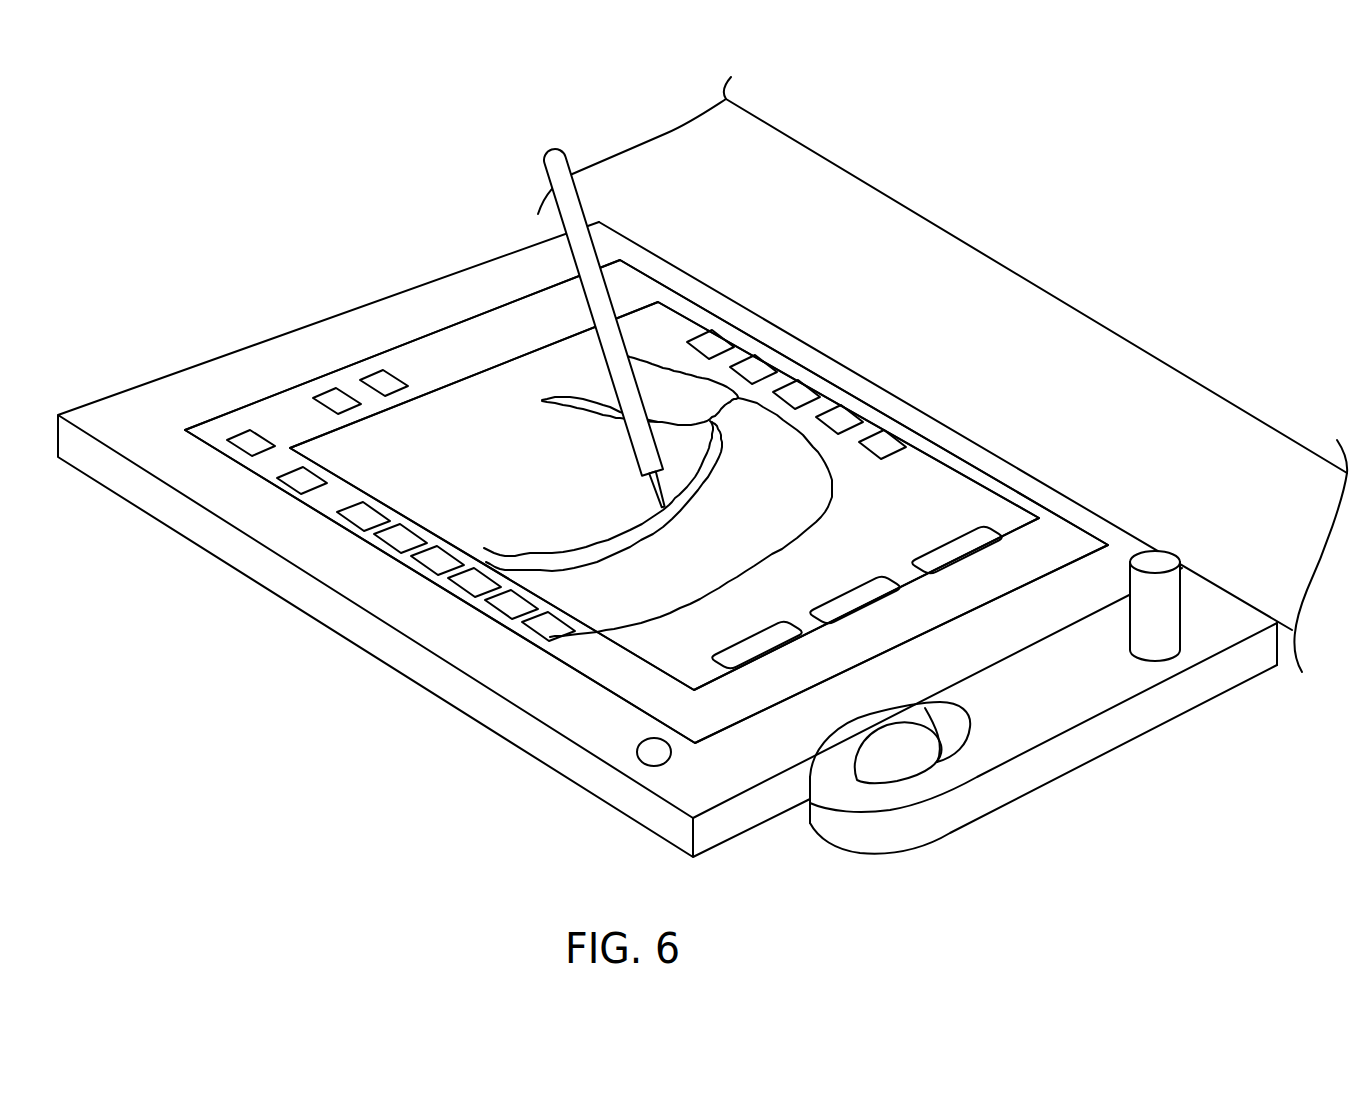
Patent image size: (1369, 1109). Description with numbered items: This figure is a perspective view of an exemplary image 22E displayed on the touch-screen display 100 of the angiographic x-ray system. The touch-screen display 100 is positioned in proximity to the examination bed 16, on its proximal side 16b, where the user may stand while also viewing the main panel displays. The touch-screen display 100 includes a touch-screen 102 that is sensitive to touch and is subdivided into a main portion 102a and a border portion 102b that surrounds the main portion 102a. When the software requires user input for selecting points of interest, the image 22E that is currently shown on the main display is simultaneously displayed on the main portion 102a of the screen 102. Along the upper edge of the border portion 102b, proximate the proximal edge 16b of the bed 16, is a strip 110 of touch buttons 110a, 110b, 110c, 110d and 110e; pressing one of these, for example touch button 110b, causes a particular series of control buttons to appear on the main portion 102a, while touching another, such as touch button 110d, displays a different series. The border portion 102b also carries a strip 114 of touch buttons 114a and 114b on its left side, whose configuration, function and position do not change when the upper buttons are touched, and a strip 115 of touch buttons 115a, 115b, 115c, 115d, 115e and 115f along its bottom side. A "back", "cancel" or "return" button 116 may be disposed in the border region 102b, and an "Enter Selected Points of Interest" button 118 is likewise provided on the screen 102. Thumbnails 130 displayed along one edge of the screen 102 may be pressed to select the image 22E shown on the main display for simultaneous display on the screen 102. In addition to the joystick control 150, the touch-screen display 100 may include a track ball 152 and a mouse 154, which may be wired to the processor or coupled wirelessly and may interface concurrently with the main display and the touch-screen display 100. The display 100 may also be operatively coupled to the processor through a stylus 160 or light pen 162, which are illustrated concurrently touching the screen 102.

The touch-screen display 100 is at (315, 227).
The touch-screen 102 is at (567, 376).
The main portion 102a is at (525, 378).
The border portion 102b is at (262, 418).
The strip of touch buttons 110 is at (860, 355).
The touch button 110a is at (708, 343).
The touch button 110b is at (758, 370).
The touch button 110c is at (805, 398).
The touch button 110d is at (848, 422).
The touch button 110e is at (935, 431).
The strip of touch buttons 114 is at (365, 318).
The touch button 114a is at (334, 397).
The touch button 114b is at (378, 380).
The strip of touch buttons 115 is at (417, 593).
The touch button 115a is at (341, 519).
The touch button 115b is at (383, 541).
The touch button 115c is at (417, 564).
The touch button 115d is at (454, 587).
The touch button 115e is at (491, 610).
The touch button 115f is at (518, 636).
The return button 116 is at (243, 438).
The Enter Selected Points of Interest button 118 is at (282, 488).
The thumbnails 130 is at (761, 643).
The joystick control 150 is at (1170, 602).
The track ball 152 is at (640, 753).
The mouse 154 is at (893, 767).
The stylus 160 is at (544, 308).
The light pen 162 is at (545, 151).
The examination bed 16 is at (1146, 364).
The proximal side 16b is at (1045, 478).
The image 22E is at (518, 489).